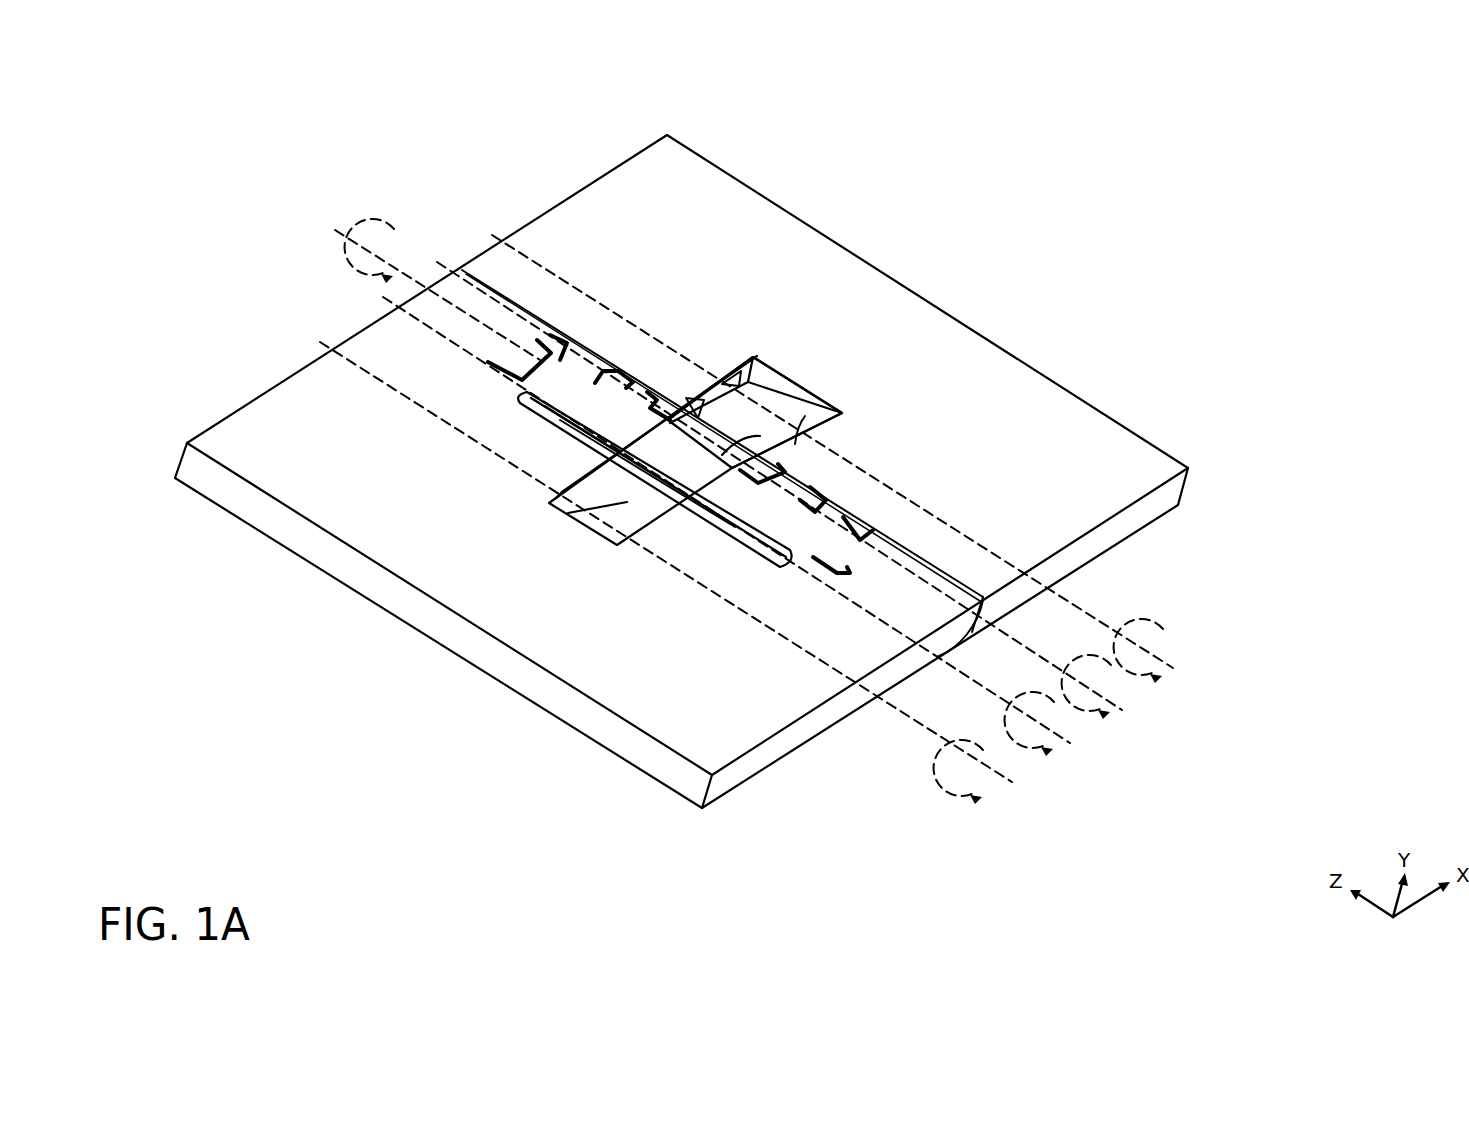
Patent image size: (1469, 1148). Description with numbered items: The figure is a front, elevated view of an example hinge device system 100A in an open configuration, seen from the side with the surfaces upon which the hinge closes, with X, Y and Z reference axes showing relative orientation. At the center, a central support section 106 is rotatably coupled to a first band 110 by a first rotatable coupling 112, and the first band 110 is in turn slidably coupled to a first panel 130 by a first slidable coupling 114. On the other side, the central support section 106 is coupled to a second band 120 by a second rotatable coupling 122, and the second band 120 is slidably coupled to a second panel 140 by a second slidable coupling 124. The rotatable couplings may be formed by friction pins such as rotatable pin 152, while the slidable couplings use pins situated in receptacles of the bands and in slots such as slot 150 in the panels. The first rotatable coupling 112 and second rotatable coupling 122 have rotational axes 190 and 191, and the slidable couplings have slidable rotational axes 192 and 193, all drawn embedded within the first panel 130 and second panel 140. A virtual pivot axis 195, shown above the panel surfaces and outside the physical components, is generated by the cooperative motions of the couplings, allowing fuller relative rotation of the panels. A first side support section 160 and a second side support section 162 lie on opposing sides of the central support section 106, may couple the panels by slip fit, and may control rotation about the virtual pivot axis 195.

The hinge device system 100A is at (238, 114).
The central support section 106 is at (705, 487).
The first band 110 is at (628, 502).
The first rotatable coupling 112 is at (663, 473).
The first slidable coupling 114 is at (568, 513).
The second band 120 is at (740, 422).
The second rotatable coupling 122 is at (805, 416).
The second slidable coupling 124 is at (782, 418).
The first panel 130 is at (361, 520).
The second panel 140 is at (1102, 455).
The slot 150 is at (702, 402).
The rotatable pin 152 is at (728, 386).
The first side support section 160 is at (526, 381).
The second side support section 162 is at (823, 530).
The rotational axis 190 is at (1047, 728).
The rotational axis 191 is at (1090, 687).
The slidable rotational axis 192 is at (990, 768).
The slidable rotational axis 193 is at (1140, 647).
The virtual pivot axis 195 is at (373, 253).